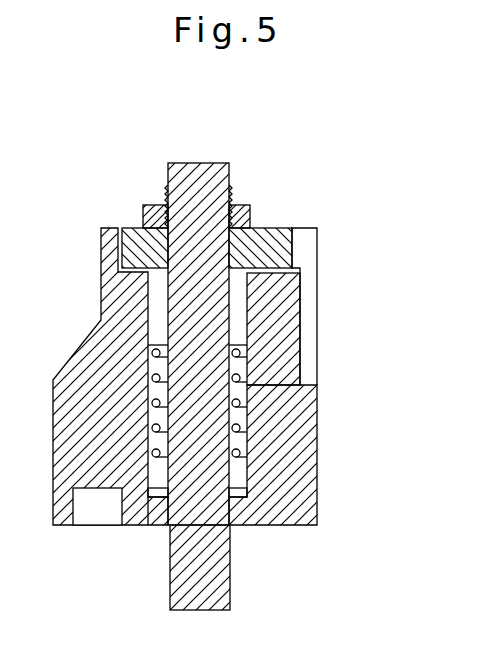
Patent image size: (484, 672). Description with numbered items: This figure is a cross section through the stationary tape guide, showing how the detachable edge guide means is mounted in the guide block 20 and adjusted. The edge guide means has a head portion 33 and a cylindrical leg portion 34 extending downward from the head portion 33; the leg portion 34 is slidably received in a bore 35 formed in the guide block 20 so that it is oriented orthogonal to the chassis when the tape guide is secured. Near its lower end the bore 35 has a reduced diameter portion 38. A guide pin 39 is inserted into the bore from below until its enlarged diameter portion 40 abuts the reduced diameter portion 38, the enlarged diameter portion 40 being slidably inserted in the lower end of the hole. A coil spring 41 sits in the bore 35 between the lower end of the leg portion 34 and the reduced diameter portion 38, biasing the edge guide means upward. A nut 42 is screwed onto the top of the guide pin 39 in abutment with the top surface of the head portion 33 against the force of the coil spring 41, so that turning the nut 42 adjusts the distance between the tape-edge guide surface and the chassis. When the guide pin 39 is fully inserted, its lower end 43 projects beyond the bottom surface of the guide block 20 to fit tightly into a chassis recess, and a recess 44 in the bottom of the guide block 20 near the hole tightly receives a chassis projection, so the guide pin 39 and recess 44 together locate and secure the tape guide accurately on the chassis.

The guide block 20 is at (97, 348).
The head portion 33 is at (272, 258).
The cylindrical leg portion 34 is at (240, 322).
The bore 35 is at (245, 458).
The reduced diameter portion 38 is at (238, 478).
The guide pin 39 is at (197, 160).
The enlarged diameter portion 40 is at (155, 523).
The coil spring 41 is at (235, 440).
The nut 42 is at (247, 212).
The lower end 43 is at (222, 586).
The recess 44 is at (97, 495).